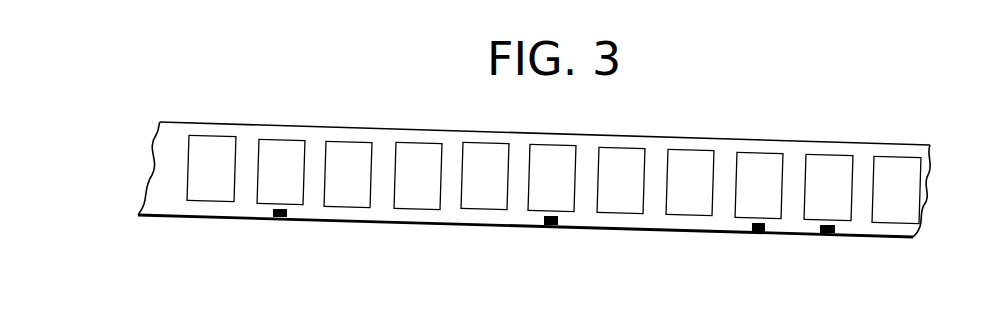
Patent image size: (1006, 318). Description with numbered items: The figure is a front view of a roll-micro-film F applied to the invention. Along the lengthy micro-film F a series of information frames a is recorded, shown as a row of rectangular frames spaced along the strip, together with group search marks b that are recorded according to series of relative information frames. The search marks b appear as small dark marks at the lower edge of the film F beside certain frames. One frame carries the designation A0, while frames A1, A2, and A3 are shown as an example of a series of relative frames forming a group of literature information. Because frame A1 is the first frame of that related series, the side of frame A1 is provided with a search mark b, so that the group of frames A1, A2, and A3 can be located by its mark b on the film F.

The roll-micro-film F is at (349, 128).
The information frame a is at (213, 190).
The group search mark b is at (282, 218).
The frame A0 is at (211, 170).
The frame A1 is at (553, 181).
The frame A2 is at (620, 183).
The frame A3 is at (690, 186).